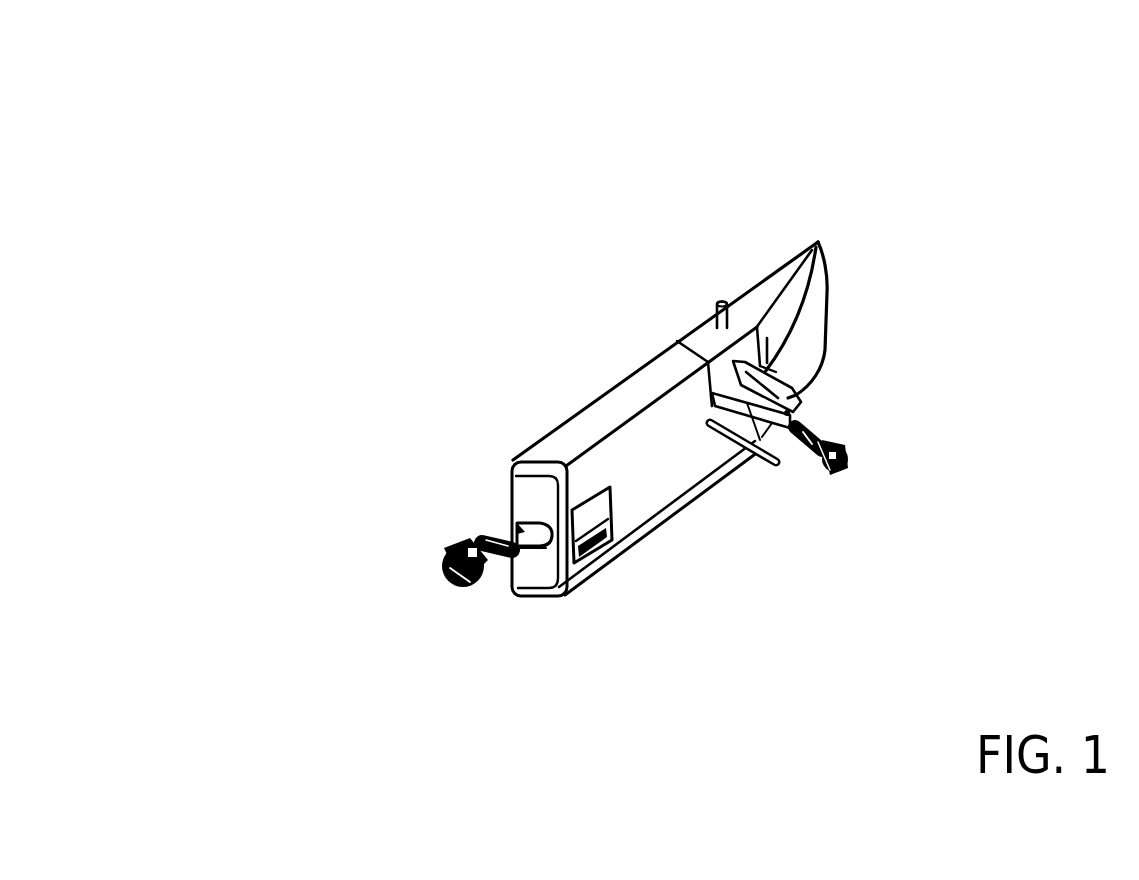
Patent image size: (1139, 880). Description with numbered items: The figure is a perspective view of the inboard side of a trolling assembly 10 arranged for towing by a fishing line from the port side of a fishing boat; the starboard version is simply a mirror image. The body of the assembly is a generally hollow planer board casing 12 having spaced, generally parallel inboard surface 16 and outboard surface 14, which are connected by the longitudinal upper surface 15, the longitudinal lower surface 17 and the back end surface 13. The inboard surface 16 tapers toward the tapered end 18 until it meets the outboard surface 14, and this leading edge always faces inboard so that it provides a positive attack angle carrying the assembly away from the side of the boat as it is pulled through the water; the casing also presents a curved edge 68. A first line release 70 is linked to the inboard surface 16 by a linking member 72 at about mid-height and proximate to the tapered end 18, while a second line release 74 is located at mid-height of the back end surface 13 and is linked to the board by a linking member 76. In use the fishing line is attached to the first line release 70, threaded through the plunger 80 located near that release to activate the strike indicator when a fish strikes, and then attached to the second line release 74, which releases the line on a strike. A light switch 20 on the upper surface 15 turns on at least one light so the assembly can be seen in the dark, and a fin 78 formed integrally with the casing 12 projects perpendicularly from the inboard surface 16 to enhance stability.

The trolling assembly 10 is at (285, 391).
The planer board casing 12 is at (766, 284).
The back end surface 13 is at (522, 497).
The outboard surface 14 is at (578, 408).
The longitudinal upper surface 15 is at (642, 382).
The inboard surface 16 is at (668, 468).
The longitudinal lower surface 17 is at (650, 527).
The tapered end 18 is at (824, 293).
The light switch 20 is at (721, 298).
The curved edge 68 is at (561, 598).
The first line release 70 is at (835, 477).
The linking member 72 is at (790, 393).
The second line release 74 is at (437, 573).
The linking member 76 is at (536, 550).
The fin 78 is at (600, 533).
The plunger 80 is at (775, 470).